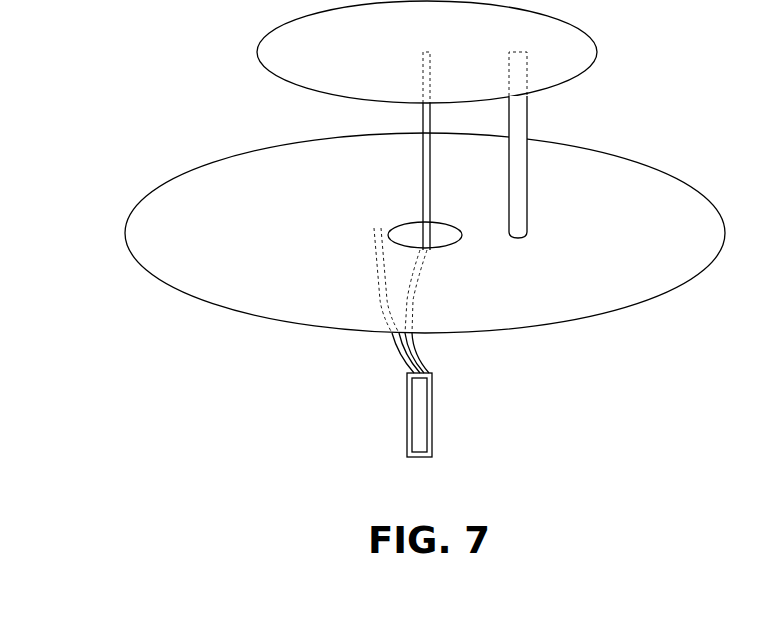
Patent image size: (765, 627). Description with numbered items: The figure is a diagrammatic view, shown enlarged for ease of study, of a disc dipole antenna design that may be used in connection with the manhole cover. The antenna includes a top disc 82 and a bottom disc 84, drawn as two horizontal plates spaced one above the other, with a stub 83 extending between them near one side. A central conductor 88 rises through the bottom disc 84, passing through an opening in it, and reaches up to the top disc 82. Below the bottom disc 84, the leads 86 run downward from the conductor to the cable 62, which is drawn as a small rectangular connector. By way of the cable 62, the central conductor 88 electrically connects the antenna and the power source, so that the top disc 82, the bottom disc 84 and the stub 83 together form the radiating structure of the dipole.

The top disc 82 is at (258, 52).
The stub 83 is at (527, 123).
The bottom disc 84 is at (125, 237).
The wires 86 is at (396, 350).
The central conductor 88 is at (422, 163).
The cable 62 is at (433, 407).